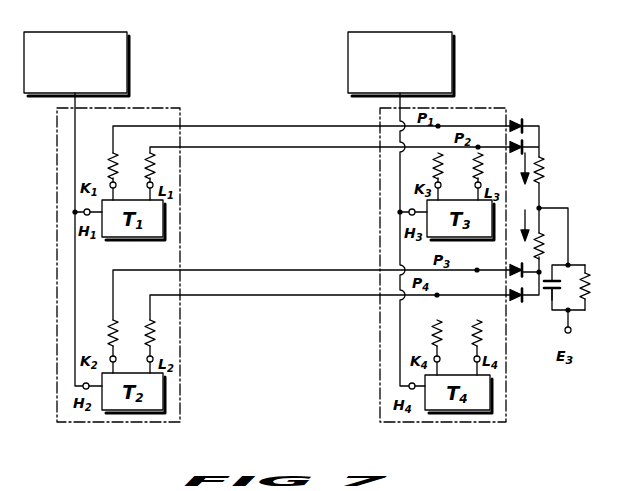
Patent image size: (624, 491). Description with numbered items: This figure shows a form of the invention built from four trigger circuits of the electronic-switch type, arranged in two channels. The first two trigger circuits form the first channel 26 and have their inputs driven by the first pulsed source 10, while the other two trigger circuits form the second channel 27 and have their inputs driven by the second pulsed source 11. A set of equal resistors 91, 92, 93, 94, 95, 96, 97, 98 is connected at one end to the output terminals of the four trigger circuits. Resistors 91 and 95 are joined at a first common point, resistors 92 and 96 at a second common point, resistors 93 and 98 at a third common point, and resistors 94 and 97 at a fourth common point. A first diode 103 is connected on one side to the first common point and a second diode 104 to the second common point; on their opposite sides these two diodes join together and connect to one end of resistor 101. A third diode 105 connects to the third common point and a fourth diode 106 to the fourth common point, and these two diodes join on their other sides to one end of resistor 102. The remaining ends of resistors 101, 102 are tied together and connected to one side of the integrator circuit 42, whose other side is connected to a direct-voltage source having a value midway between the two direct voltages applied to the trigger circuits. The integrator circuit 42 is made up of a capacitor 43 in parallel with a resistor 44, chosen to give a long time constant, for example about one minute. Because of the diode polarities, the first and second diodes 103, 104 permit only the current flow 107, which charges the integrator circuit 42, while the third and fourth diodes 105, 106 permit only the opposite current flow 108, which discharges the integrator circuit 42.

The first pulsed source 10 is at (72, 32).
The second pulsed source 11 is at (402, 32).
The first channel 26 is at (143, 108).
The second channel 27 is at (470, 108).
The resistor 91 is at (110, 160).
The resistor 92 is at (154, 172).
The resistor 93 is at (110, 333).
The resistor 94 is at (158, 332).
The resistor 95 is at (436, 163).
The resistor 96 is at (481, 170).
The resistor 97 is at (435, 334).
The resistor 98 is at (476, 332).
The resistor 101 is at (541, 176).
The resistor 102 is at (543, 248).
The first diode 103 is at (526, 123).
The second diode 104 is at (526, 145).
The third diode 105 is at (516, 267).
The fourth diode 106 is at (521, 303).
The current flow 107 is at (530, 187).
The current flow 108 is at (527, 230).
The integrator circuit 42 is at (561, 295).
The capacitor 43 is at (552, 295).
The resistor 44 is at (585, 272).